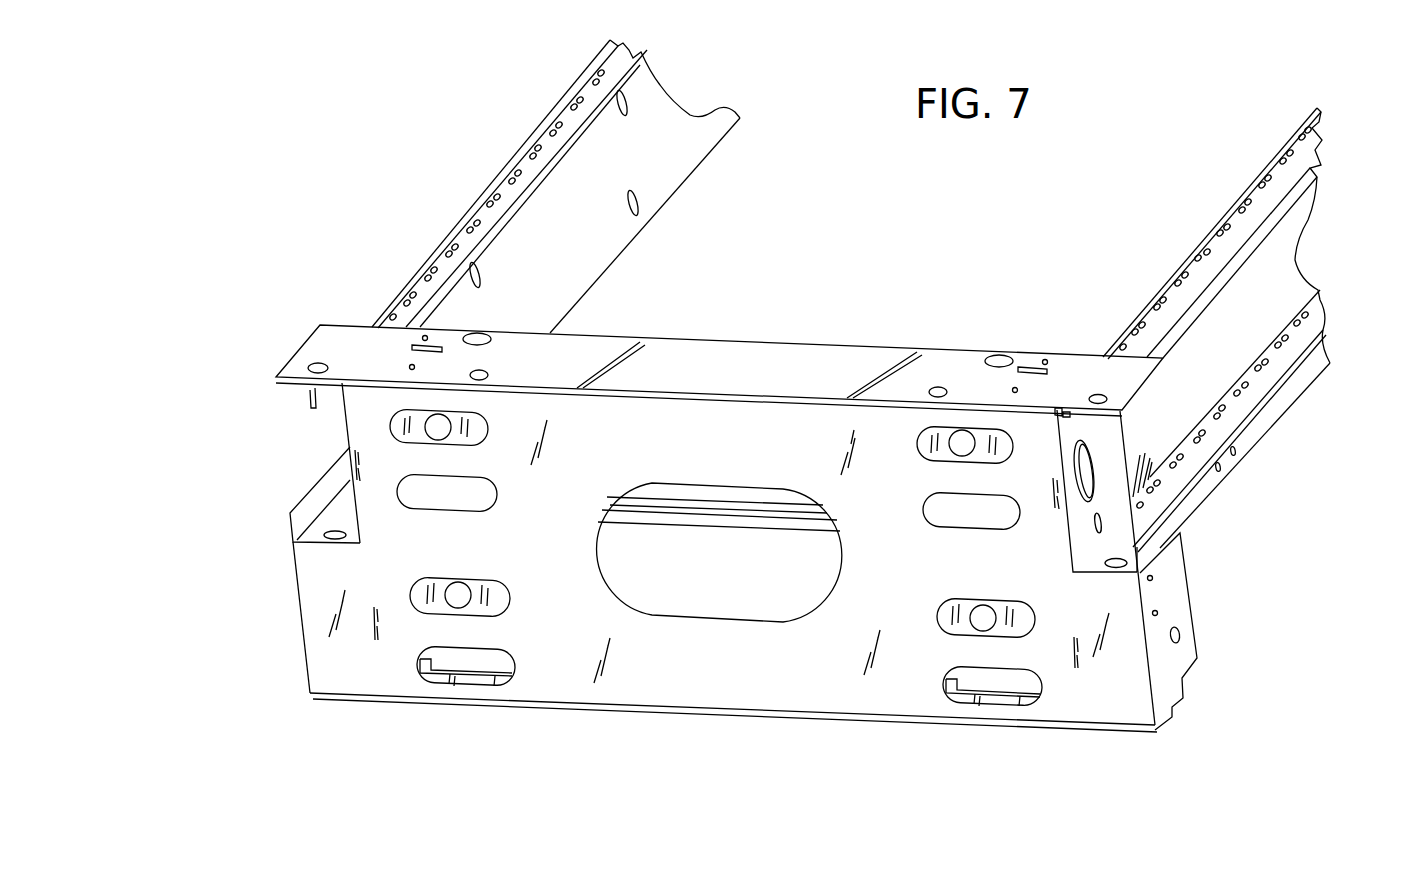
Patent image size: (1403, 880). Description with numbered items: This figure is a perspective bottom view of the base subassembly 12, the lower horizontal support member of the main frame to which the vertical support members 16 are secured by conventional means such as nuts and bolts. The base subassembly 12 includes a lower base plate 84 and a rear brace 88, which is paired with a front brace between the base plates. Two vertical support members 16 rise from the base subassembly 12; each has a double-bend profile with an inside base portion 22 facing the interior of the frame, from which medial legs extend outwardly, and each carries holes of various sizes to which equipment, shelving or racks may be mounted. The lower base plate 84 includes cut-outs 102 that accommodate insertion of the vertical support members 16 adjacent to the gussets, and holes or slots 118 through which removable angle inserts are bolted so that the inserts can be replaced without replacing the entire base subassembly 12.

The base subassembly 12 is at (247, 462).
The vertical support member 16 is at (595, 137).
The inside base portion 22 is at (560, 263).
The lower base plate 84 is at (734, 678).
The rear brace 88 is at (837, 362).
The cut-out 102 is at (360, 527).
The hole or slot 118 is at (920, 433).